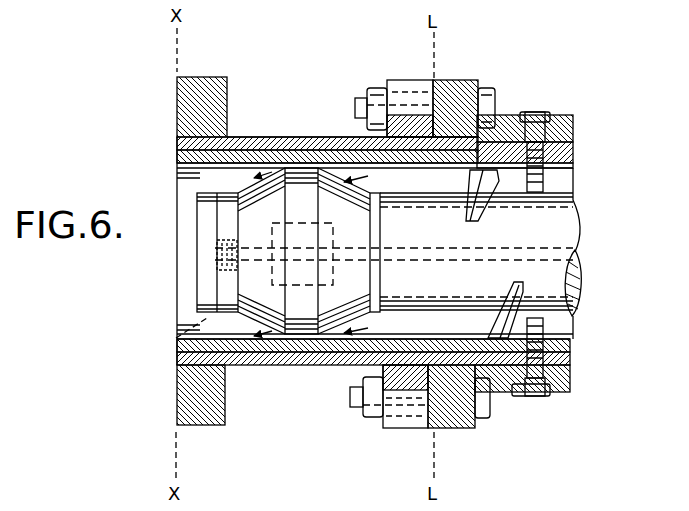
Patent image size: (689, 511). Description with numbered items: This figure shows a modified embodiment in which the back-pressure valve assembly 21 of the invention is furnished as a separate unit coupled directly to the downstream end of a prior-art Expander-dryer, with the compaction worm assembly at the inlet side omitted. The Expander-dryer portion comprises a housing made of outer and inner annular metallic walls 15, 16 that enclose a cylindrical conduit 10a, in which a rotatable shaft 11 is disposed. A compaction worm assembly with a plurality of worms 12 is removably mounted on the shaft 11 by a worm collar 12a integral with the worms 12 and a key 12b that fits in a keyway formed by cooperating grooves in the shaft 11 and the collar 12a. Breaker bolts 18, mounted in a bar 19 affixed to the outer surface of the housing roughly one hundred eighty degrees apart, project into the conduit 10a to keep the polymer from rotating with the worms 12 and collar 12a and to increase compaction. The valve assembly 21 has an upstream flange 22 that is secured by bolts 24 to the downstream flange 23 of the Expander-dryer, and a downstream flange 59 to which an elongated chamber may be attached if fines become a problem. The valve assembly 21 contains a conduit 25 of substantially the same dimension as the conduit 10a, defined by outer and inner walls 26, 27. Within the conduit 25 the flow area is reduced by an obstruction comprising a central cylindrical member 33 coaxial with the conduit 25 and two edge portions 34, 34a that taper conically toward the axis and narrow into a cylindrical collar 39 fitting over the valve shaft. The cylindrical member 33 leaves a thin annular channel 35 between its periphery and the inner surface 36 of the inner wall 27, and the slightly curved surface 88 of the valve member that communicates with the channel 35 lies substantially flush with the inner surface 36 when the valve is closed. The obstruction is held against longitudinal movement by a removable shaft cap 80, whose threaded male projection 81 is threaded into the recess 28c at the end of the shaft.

The cylindrical conduit 10a is at (468, 178).
The rotatable shaft 11 is at (585, 286).
The worms 12 is at (490, 326).
The worm collar 12a is at (582, 306).
The key 12b is at (457, 265).
The outer annular metallic wall 15 is at (575, 149).
The inner annular metallic wall 16 is at (575, 165).
The breaker bolts 18 is at (537, 112).
The bar 19 is at (573, 118).
The valve assembly 21 is at (286, 133).
The upstream flange 22 is at (408, 80).
The downstream flange 23 is at (462, 80).
The bolts 24 is at (362, 104).
The conduit 25 is at (180, 341).
The outer wall 26 is at (255, 143).
The inner wall 27 is at (177, 157).
The recess 28c is at (228, 272).
The central cylindrical member 33 is at (317, 196).
The edge portion 34 is at (360, 191).
The edge portion 34a is at (250, 192).
The annular channel 35 is at (305, 166).
The inner surface 36 is at (300, 344).
The cylindrical collar 39 is at (428, 200).
The downstream flange 59 is at (177, 108).
The shaft cap 80 is at (200, 203).
The threaded male projection 81 is at (212, 257).
The surface 88 is at (362, 277).